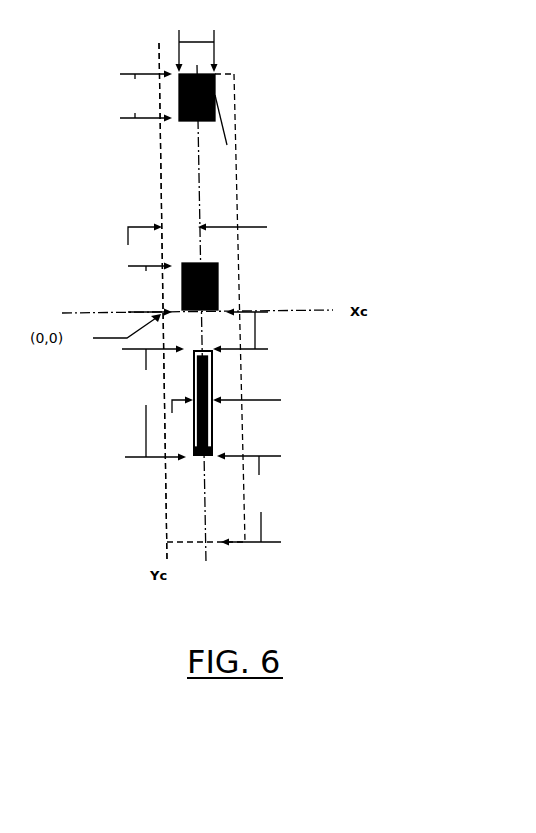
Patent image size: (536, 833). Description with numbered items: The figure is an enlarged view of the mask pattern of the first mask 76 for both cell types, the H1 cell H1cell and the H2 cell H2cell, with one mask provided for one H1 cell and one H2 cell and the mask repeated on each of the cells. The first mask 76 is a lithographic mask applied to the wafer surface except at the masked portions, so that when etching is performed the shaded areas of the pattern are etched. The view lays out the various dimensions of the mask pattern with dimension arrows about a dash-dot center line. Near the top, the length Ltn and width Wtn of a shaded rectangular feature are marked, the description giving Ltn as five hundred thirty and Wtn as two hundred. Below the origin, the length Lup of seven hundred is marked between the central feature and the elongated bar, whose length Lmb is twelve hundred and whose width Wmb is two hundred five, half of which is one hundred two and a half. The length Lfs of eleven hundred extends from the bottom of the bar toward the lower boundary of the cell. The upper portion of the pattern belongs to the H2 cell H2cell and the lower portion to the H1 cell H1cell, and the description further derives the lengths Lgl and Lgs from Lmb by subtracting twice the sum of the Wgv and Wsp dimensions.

The first mask 76 is at (262, 199).
The Wtn dimension Wtn is at (194, 42).
The Ltn dimension Ltn is at (143, 193).
The H2 cell H2cell is at (158, 183).
The Lup dimension Lup is at (259, 331).
The Lmb dimension Lmb is at (154, 403).
The Wmb dimension Wmb is at (257, 402).
The Lfs dimension Lfs is at (252, 499).
The H1 cell H1cell is at (167, 487).